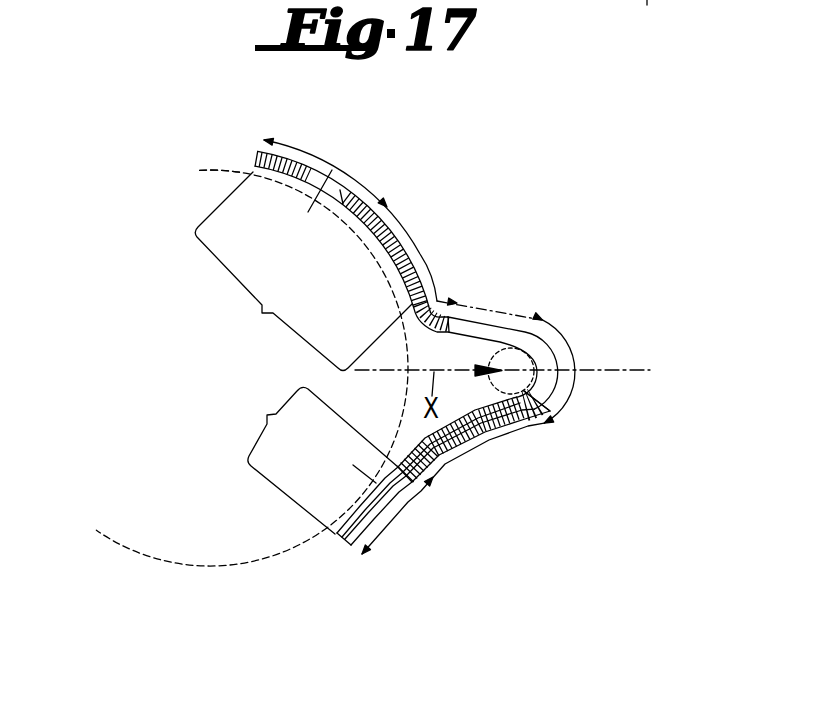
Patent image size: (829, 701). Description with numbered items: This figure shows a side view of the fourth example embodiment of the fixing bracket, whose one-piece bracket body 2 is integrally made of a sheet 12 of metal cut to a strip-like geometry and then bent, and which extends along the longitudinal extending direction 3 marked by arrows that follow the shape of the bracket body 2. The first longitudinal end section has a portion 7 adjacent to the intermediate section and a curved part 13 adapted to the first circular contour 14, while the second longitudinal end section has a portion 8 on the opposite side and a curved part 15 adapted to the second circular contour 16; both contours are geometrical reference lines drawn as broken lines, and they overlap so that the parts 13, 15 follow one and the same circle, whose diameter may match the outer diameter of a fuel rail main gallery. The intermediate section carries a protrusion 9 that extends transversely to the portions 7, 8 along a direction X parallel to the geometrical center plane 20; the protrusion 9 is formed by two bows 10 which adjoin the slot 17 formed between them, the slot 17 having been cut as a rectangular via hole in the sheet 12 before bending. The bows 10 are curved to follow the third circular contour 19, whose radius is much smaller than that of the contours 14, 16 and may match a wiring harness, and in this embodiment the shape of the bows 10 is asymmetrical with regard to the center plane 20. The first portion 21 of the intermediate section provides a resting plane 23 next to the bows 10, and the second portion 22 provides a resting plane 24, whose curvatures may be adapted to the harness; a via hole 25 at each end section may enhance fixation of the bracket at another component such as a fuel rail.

The bracket body 2 is at (493, 329).
The longitudinal extending direction 3 is at (357, 177).
The portion 7 is at (424, 268).
The portion 8 is at (368, 515).
The protrusion 9 is at (589, 354).
The bows 10 is at (511, 371).
The sheet 12 is at (490, 423).
The part 13 is at (262, 313).
The first circular contour 14 is at (223, 168).
The part 15 is at (267, 415).
The second circular contour 16 is at (212, 572).
The slot 17 is at (534, 339).
The third circular contour 19 is at (533, 397).
The geometrical center plane 20 is at (628, 372).
The first portion 21 is at (420, 312).
The second portion 22 is at (507, 413).
The resting plane 23 is at (434, 290).
The resting plane 24 is at (461, 437).
The via hole 25 is at (313, 181).